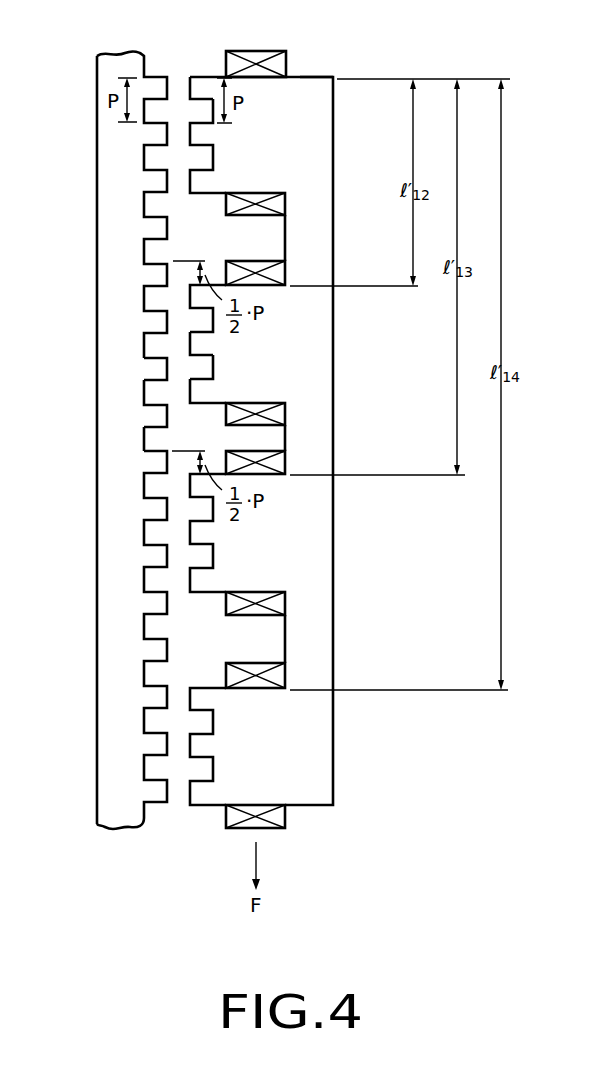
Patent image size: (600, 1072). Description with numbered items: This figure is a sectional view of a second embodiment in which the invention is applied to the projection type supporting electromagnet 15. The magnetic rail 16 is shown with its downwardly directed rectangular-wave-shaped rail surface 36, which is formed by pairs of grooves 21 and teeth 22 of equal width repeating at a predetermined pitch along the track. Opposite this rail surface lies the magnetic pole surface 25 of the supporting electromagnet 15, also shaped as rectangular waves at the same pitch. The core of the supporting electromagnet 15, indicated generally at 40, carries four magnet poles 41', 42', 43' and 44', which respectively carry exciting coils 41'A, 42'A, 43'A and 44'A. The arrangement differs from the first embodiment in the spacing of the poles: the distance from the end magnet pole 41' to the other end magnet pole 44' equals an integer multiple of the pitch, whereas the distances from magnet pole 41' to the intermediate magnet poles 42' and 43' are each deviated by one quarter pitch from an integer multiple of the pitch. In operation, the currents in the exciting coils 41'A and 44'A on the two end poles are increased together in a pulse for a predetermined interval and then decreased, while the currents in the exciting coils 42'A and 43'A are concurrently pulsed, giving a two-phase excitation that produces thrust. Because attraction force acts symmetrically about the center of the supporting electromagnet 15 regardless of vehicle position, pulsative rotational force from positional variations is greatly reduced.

The magnetic rail 16 is at (97, 90).
The downwardly directed rectangular-wave-shaped rail surface 36 is at (152, 97).
The magnetic pole surface 25 is at (199, 97).
The projection type supporting electromagnet 15 is at (311, 77).
The movable member 40 is at (313, 805).
The magnet pole 41' is at (284, 146).
The exciting coil 41'A is at (257, 45).
The magnet pole 42' is at (285, 344).
The exciting coil 42'A is at (310, 296).
The magnet pole 43' is at (285, 533).
The exciting coil 43'A is at (310, 485).
The magnet pole 44' is at (285, 746).
The exciting coil 44'A is at (309, 698).
The tooth 22 is at (150, 367).
The groove 21 is at (153, 442).